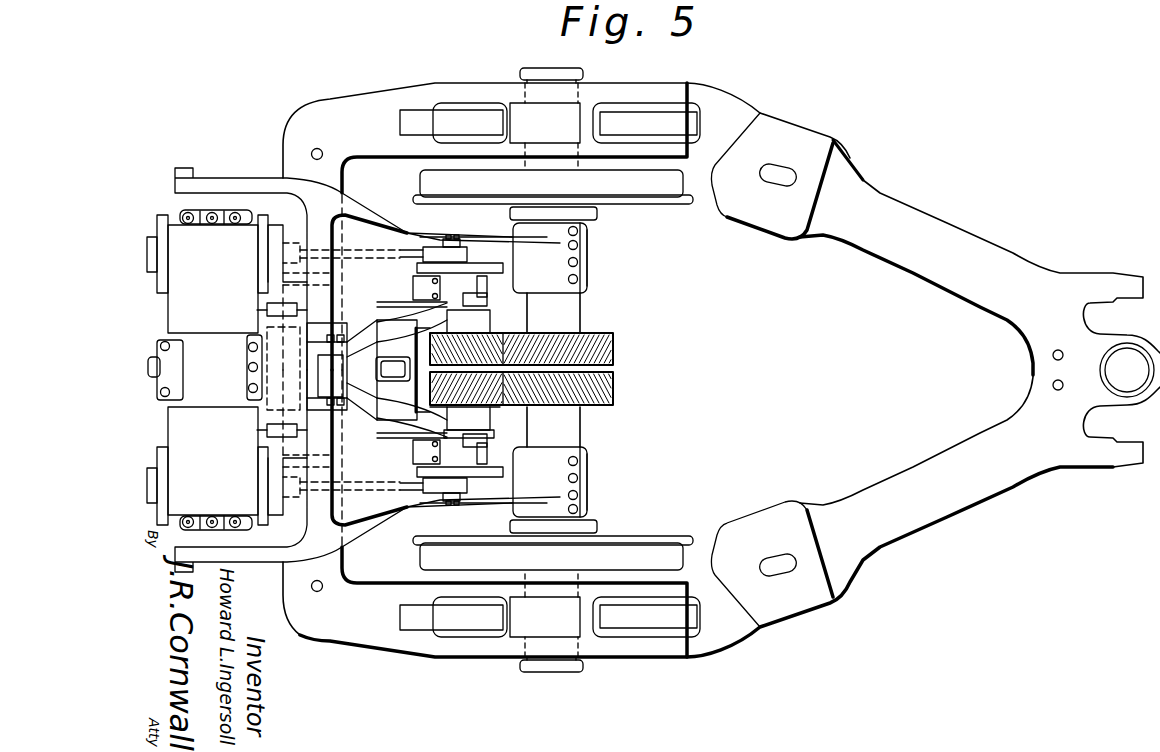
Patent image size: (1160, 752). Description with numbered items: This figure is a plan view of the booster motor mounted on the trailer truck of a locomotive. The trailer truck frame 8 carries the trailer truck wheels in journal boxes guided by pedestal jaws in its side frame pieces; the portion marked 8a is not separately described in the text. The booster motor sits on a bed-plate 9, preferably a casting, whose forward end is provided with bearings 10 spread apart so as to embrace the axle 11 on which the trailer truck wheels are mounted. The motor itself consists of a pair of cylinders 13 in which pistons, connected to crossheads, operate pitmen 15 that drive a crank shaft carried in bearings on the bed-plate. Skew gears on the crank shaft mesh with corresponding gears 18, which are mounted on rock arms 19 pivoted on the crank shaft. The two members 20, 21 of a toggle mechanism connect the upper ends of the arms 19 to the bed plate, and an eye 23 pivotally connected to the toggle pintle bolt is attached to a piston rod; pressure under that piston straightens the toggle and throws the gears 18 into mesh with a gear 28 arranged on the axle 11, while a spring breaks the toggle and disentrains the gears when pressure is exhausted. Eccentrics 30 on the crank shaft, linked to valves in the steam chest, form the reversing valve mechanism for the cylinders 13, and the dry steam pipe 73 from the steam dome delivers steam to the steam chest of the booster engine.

The trailer truck frame 8 is at (862, 500).
The frame side member 8a is at (303, 567).
The bed-plate 9 is at (258, 185).
The bearings 10 is at (503, 370).
The axle 11 is at (565, 312).
The cylinders 13 is at (207, 370).
The pitmen 15 is at (415, 250).
The gears 18 is at (452, 343).
The rock arms 19 is at (480, 325).
The toggle member 20 is at (470, 432).
The toggle member 21 is at (342, 370).
The eye 23 is at (393, 369).
The gear 28 is at (613, 383).
The eccentrics 30 is at (430, 307).
The dry steam pipe 73 is at (163, 368).